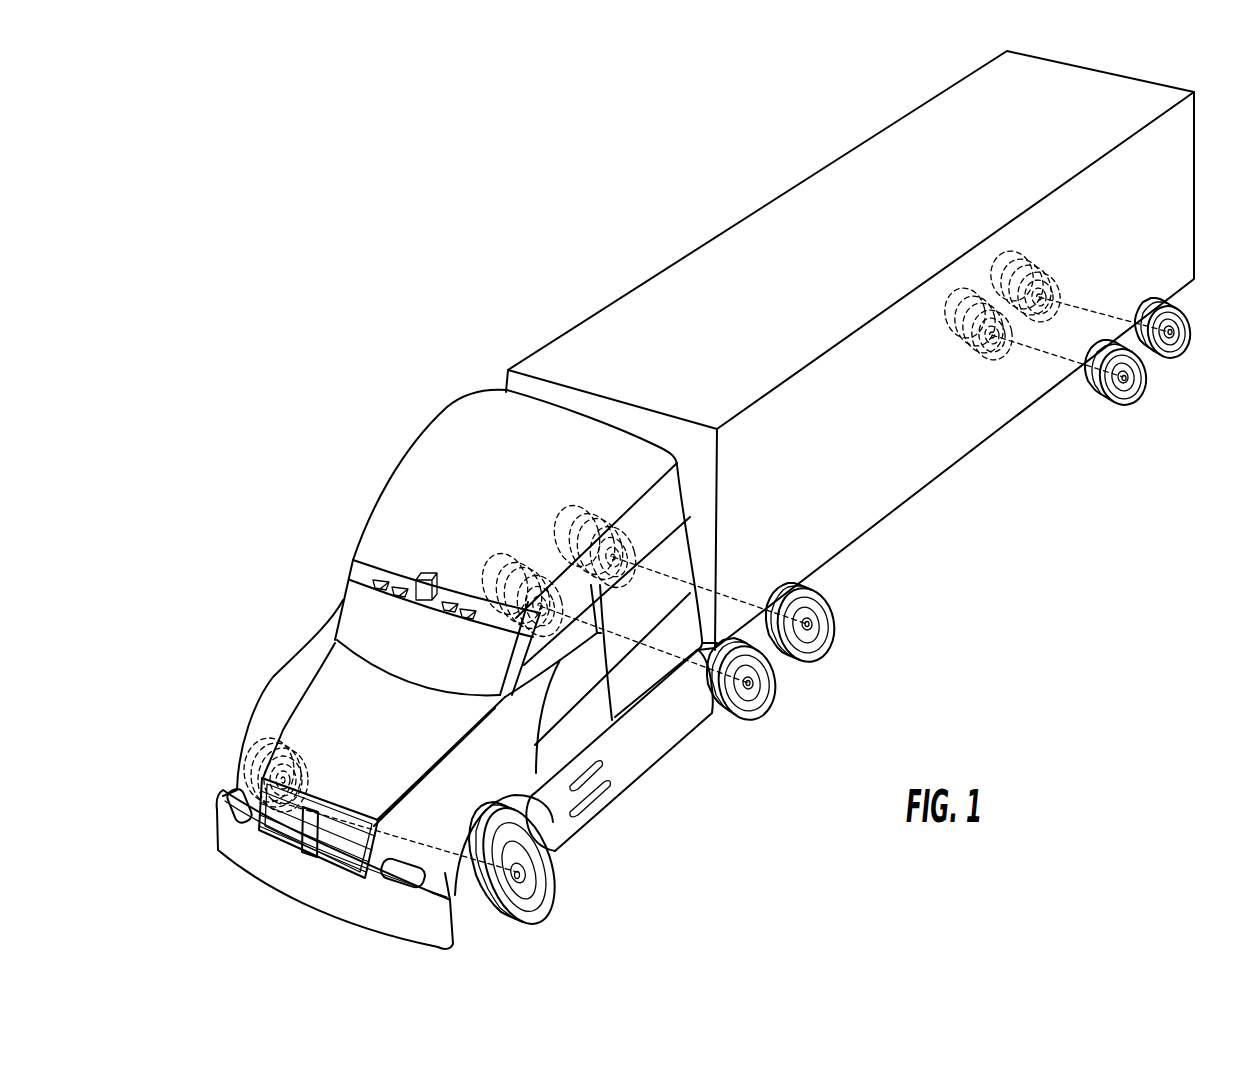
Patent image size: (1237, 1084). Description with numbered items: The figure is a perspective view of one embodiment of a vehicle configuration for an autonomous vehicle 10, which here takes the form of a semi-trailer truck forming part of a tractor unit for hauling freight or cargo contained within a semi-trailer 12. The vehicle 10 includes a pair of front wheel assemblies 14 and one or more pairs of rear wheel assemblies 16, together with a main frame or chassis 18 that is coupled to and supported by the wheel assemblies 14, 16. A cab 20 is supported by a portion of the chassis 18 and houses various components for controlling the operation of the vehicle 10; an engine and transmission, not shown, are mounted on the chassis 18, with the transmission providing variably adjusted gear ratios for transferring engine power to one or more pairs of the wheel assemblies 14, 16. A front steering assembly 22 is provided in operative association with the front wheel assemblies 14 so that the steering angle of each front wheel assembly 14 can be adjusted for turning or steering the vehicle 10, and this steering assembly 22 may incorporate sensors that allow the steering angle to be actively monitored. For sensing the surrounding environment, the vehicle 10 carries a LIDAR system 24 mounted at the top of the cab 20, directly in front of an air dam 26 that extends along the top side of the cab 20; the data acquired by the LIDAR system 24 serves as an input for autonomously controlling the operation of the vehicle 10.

The autonomous vehicle 10 is at (284, 500).
The semi-trailer 12 is at (763, 198).
The front wheel assemblies 14 is at (545, 897).
The rear wheel assemblies 16 is at (800, 665).
The chassis 18 is at (607, 807).
The cab 20 is at (627, 673).
The front steering assembly 22 is at (356, 796).
The LIDAR system 24 is at (400, 571).
The air dam 26 is at (443, 450).